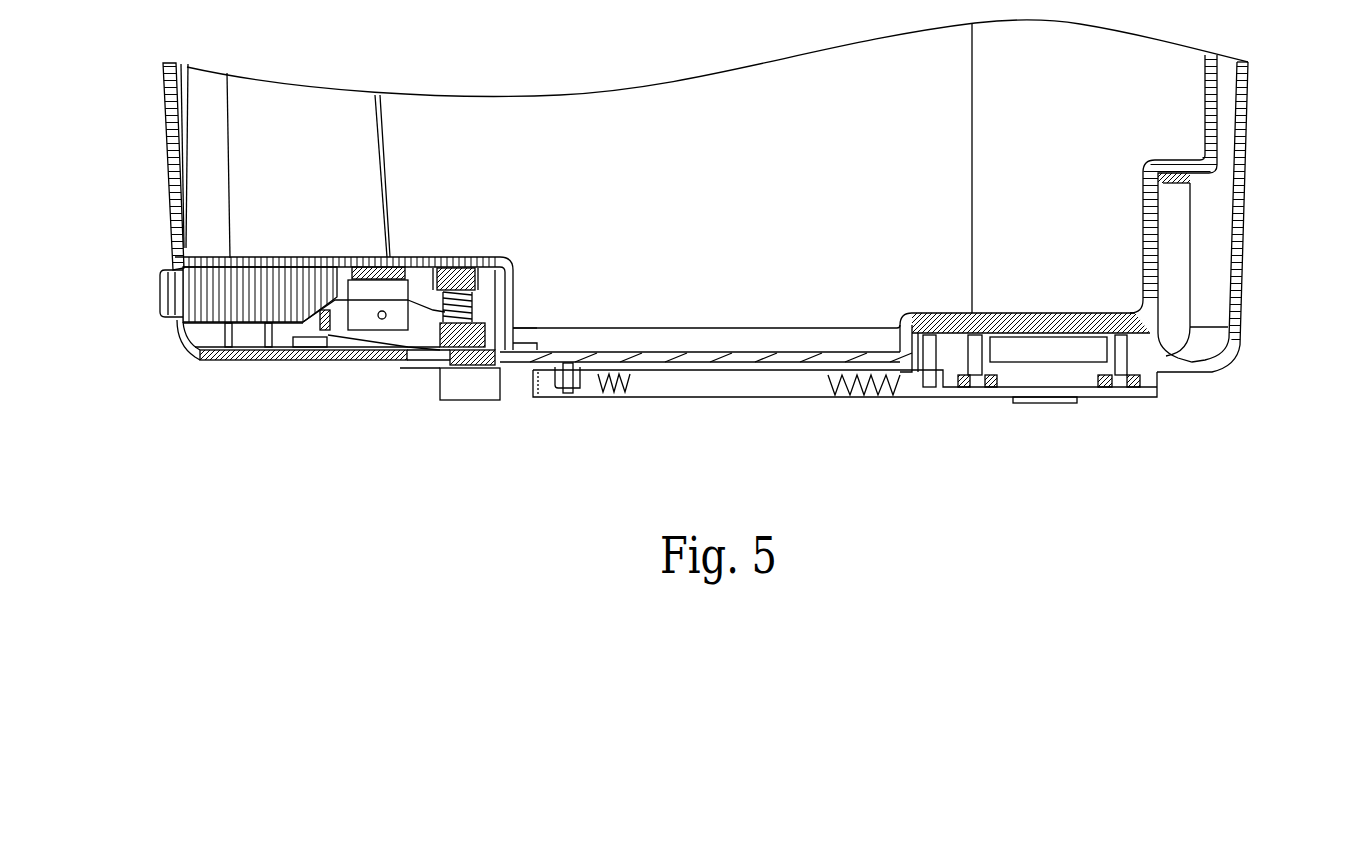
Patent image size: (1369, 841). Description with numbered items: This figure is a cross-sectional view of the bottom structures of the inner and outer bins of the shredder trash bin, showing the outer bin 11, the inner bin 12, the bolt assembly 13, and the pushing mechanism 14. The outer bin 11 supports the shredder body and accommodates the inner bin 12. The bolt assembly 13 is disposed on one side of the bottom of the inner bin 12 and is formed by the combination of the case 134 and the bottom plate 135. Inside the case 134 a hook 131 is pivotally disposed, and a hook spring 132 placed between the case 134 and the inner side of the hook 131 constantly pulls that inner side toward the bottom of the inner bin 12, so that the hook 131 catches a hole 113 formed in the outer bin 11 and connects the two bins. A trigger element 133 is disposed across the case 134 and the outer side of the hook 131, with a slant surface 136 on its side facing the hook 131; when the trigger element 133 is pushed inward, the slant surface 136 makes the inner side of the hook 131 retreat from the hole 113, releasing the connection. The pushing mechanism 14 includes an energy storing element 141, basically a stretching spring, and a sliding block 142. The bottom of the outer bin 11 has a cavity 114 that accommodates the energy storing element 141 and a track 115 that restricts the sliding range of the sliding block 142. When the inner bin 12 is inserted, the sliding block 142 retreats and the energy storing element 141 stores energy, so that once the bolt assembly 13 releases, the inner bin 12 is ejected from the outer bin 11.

The outer bin 11 is at (1243, 140).
The inner bin 12 is at (172, 122).
The bolt assembly 13 is at (498, 232).
The pushing mechanism 14 is at (1060, 272).
The hole 113 is at (480, 363).
The cavity 114 is at (900, 387).
The track 115 is at (1058, 365).
The hook 131 is at (467, 363).
The hook spring 132 is at (472, 305).
The trigger element 133 is at (160, 290).
The case 134 is at (420, 258).
The bottom plate 135 is at (252, 360).
The slant surface 136 is at (332, 297).
The energy storing element 141 is at (853, 397).
The sliding block 142 is at (1158, 290).